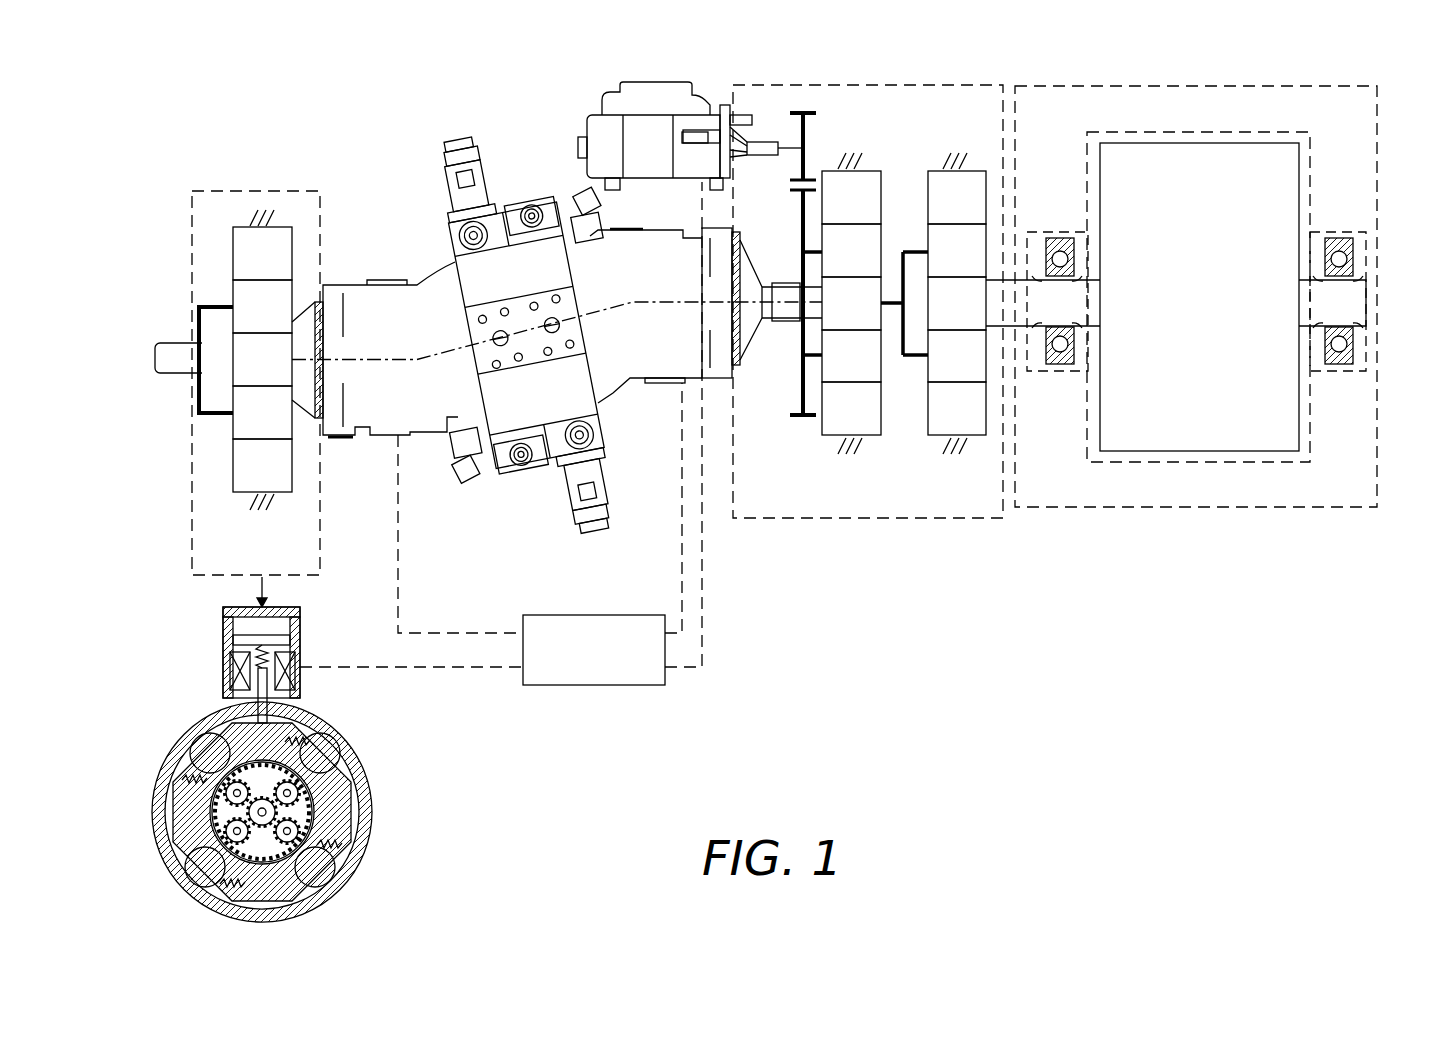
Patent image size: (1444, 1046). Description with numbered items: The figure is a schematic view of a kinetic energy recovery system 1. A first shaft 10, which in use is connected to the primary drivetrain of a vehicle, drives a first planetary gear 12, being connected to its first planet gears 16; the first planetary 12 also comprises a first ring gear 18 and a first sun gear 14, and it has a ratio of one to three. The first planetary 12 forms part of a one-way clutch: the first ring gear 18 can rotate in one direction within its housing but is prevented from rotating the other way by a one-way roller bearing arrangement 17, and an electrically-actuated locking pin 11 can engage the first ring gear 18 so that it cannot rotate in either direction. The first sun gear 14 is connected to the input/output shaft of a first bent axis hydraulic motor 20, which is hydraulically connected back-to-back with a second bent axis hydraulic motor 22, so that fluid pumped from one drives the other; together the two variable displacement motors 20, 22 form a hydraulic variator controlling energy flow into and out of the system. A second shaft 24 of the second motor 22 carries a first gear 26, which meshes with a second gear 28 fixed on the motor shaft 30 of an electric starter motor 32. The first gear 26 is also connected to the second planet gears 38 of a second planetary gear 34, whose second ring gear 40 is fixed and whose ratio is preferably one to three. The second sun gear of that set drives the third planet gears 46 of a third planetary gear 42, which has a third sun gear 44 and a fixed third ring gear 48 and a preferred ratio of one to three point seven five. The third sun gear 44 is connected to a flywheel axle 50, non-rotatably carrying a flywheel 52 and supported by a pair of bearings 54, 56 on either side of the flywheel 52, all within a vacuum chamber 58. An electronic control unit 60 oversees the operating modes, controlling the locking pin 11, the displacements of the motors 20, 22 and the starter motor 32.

The kinetic energy recovery system 1 is at (706, 66).
The first shaft 10 is at (170, 352).
The locking pin 11 is at (238, 686).
The first planetary gear 12 is at (205, 597).
The first sun gear 14 is at (231, 350).
The first planet gears 16 is at (300, 285).
The one-way roller bearing arrangement 17 is at (200, 873).
The first ring gear 18 is at (298, 470).
The first bent axis hydraulic motor 20 is at (417, 452).
The second bent axis hydraulic motor 22 is at (656, 402).
The second shaft 24 is at (782, 313).
The first gear 26 is at (798, 215).
The second gear 28 is at (808, 130).
The motor shaft 30 is at (787, 143).
The electric starter motor 32 is at (648, 92).
The second planetary gear 34 is at (855, 530).
The second planet gears 38 is at (883, 230).
The second ring gear 40 is at (820, 428).
The third planetary gear 42 is at (961, 530).
The third sun gear 44 is at (978, 302).
The third planet gears 46 is at (987, 237).
The third ring gear 48 is at (935, 165).
The flywheel axle 50 is at (1358, 303).
The flywheel 52 is at (1136, 160).
The bearing 54 is at (1060, 252).
The bearing 56 is at (1340, 252).
The vacuum chamber 58 is at (1252, 131).
The electronic control unit 60 is at (640, 686).